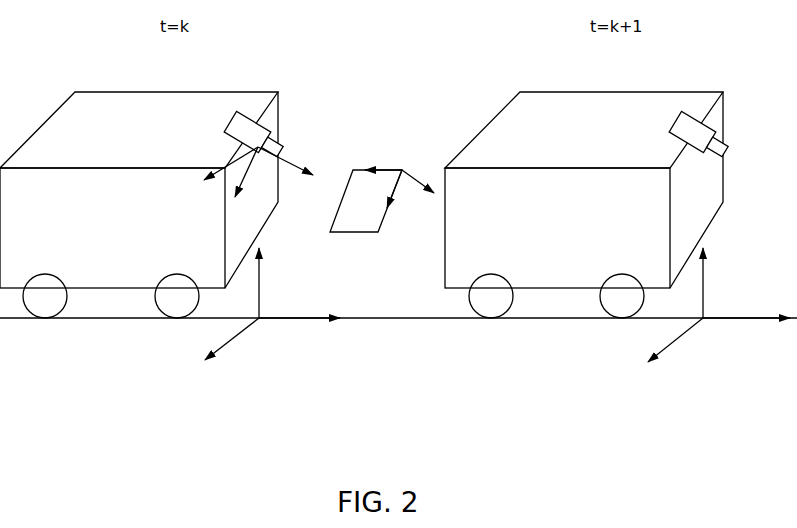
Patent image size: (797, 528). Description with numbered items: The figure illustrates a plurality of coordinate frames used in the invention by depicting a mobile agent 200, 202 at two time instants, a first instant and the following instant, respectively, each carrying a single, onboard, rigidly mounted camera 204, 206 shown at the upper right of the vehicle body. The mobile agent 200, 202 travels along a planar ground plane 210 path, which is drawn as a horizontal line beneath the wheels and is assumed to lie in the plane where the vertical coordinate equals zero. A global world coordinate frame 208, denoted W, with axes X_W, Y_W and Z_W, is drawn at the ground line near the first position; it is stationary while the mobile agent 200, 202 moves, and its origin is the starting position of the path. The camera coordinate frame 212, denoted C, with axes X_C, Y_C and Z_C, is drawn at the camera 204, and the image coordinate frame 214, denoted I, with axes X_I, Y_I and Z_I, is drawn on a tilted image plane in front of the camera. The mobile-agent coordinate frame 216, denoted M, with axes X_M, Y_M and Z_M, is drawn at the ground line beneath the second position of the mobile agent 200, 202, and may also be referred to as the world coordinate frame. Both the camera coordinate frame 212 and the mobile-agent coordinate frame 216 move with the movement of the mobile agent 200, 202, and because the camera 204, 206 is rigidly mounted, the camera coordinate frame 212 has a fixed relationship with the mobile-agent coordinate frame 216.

The mobile agent 200 is at (54, 102).
The mobile agent 202 is at (500, 102).
The camera 204 is at (247, 109).
The camera 206 is at (716, 72).
The global world coordinate frame 208 is at (270, 355).
The planar ground plane 210 is at (548, 324).
The camera coordinate frame 212 is at (262, 162).
The image coordinate frame 214 is at (407, 164).
The mobile-agent coordinate frame 216 is at (724, 349).